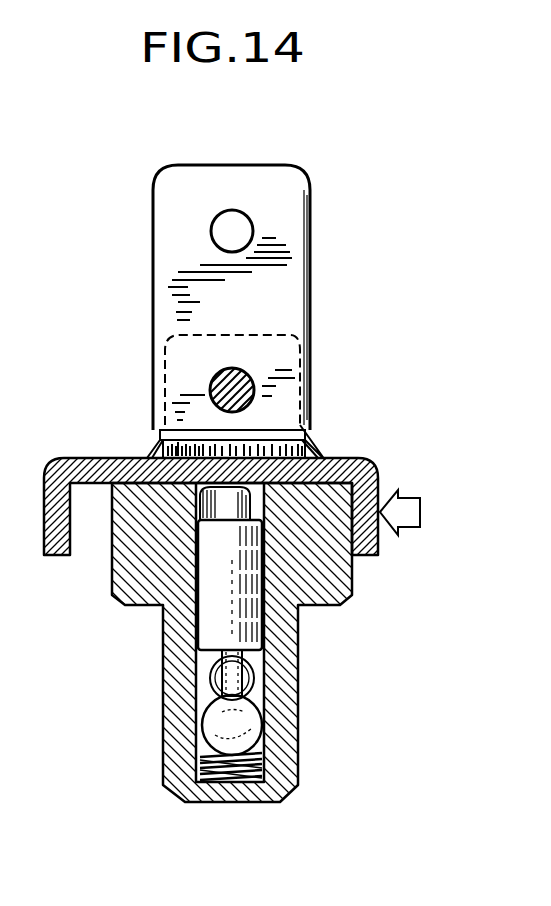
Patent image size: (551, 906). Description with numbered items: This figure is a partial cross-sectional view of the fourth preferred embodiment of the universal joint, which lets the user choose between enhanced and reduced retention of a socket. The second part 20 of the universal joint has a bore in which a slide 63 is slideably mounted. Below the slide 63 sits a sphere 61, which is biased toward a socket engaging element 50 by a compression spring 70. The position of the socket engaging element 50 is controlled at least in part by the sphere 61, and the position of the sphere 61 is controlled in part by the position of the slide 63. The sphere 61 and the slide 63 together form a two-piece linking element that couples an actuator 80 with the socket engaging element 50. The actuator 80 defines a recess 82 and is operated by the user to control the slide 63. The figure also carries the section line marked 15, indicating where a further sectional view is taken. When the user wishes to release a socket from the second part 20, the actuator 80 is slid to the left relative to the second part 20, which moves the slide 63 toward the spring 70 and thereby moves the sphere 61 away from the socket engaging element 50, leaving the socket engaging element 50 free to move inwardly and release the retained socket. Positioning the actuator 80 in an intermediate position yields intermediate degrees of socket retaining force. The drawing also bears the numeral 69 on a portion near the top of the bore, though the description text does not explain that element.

The second part 20 is at (148, 640).
The actuator 80 is at (372, 466).
The recess 82 is at (158, 457).
The neck portion 69 is at (228, 498).
The slide 63 is at (215, 606).
The socket engaging element 50 is at (265, 680).
The sphere 61 is at (265, 728).
The compression spring 70 is at (265, 770).
The section line for FIG. 15 is at (150, 575).